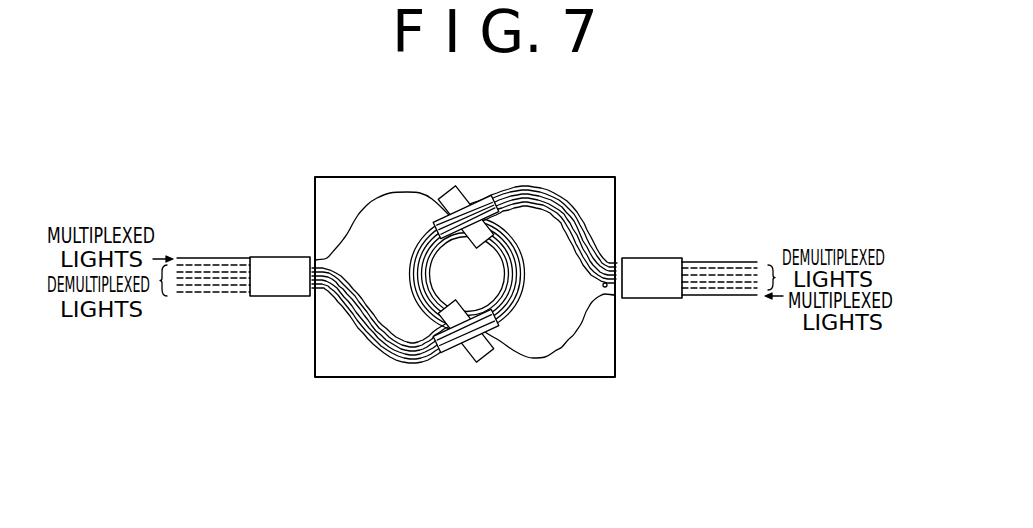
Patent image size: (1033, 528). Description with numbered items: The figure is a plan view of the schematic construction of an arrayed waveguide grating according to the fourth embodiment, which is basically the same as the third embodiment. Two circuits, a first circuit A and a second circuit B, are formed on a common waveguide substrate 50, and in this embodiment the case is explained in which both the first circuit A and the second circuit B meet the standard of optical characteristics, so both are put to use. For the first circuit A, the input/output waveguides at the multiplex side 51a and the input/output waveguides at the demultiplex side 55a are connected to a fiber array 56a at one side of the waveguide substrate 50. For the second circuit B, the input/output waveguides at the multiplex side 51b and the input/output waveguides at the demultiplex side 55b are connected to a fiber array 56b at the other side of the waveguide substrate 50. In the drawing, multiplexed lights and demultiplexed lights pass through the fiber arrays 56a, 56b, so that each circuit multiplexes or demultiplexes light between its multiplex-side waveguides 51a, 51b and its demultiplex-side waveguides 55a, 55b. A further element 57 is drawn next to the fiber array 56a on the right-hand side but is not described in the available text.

The waveguide substrate 50 is at (577, 177).
The input/output waveguides at multiplex side 51a is at (575, 335).
The input/output waveguides at multiplex side 51b is at (353, 227).
The input/output waveguides at demultiplex side 55a is at (604, 260).
The input/output waveguides at demultiplex side 55b is at (335, 272).
The fiber array 56a is at (663, 298).
The fiber array 56b is at (278, 296).
The optical fiber cable 57 is at (727, 258).
The first circuit A is at (543, 361).
The second circuit B is at (389, 177).